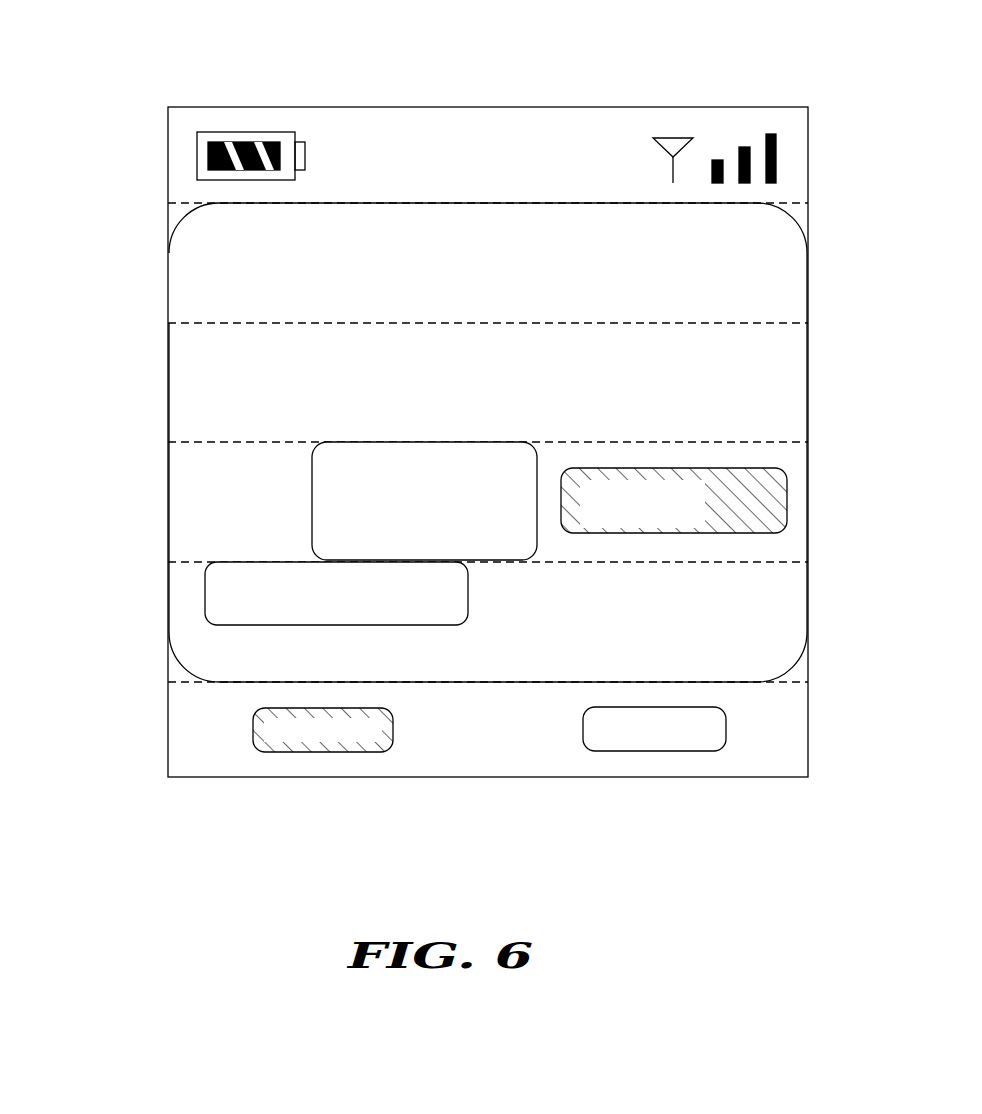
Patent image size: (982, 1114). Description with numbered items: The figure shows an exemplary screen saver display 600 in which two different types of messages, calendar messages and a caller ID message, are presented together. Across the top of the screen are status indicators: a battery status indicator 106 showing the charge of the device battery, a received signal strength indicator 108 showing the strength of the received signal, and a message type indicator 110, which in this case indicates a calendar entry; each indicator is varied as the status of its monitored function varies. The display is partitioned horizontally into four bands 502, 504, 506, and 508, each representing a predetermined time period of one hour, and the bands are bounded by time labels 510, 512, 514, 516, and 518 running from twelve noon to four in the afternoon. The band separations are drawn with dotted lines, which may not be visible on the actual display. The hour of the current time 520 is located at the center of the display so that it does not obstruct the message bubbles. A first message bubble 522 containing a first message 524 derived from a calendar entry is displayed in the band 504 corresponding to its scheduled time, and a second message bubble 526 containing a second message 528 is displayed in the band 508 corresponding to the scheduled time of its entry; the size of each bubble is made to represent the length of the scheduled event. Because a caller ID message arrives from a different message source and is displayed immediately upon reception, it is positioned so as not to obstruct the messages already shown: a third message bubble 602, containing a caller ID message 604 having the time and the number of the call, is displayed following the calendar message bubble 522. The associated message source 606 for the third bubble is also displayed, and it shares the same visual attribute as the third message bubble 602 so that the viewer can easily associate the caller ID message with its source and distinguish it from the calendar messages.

The screen saver display 600 is at (220, 29).
The battery status indicator 106 is at (310, 130).
The received signal strength indicator 108 is at (710, 128).
The message type indicator 110 is at (647, 757).
The band 502 is at (795, 301).
The band 504 is at (795, 386).
The band 506 is at (795, 499).
The band 508 is at (795, 599).
The time label 510 is at (83, 187).
The time label 512 is at (83, 307).
The time label 514 is at (83, 427).
The time label 516 is at (83, 548).
The time label 518 is at (83, 668).
The current time 520 is at (528, 228).
The first message bubble 522 is at (300, 468).
The first message 524 is at (455, 502).
The second message bubble 526 is at (478, 608).
The second message 528 is at (222, 583).
The third message bubble 602 is at (598, 538).
The caller ID message 604 is at (675, 495).
The message source 606 is at (282, 758).